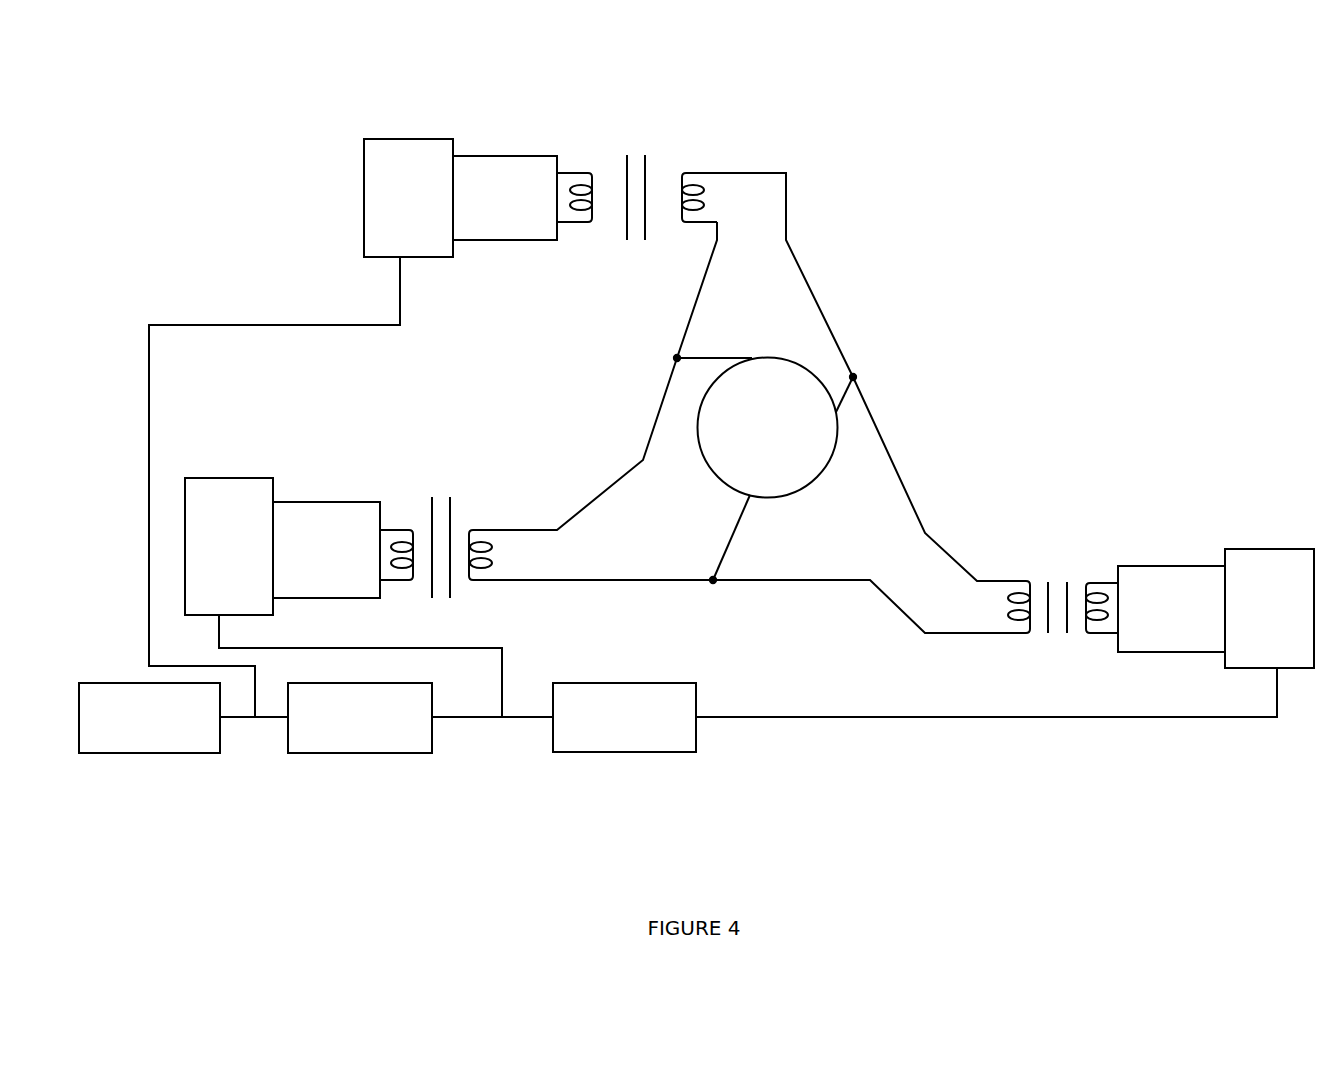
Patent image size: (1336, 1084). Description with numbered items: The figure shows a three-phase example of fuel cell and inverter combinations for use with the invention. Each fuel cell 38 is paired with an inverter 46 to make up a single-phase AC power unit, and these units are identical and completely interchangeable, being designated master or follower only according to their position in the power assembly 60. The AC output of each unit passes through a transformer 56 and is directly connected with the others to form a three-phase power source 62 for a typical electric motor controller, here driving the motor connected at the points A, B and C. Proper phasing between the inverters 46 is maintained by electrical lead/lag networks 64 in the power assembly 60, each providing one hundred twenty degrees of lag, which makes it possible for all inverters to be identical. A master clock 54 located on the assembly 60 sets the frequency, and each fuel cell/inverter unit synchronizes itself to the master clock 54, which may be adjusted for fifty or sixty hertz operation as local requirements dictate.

The fuel cell 38 is at (412, 139).
The inverter 46 is at (498, 156).
The transformer 56 is at (638, 152).
The power assembly 60 is at (913, 427).
The three-phase power source 62 is at (805, 370).
The master clock 54 is at (147, 753).
The electrical lead/lag network 64 is at (348, 753).